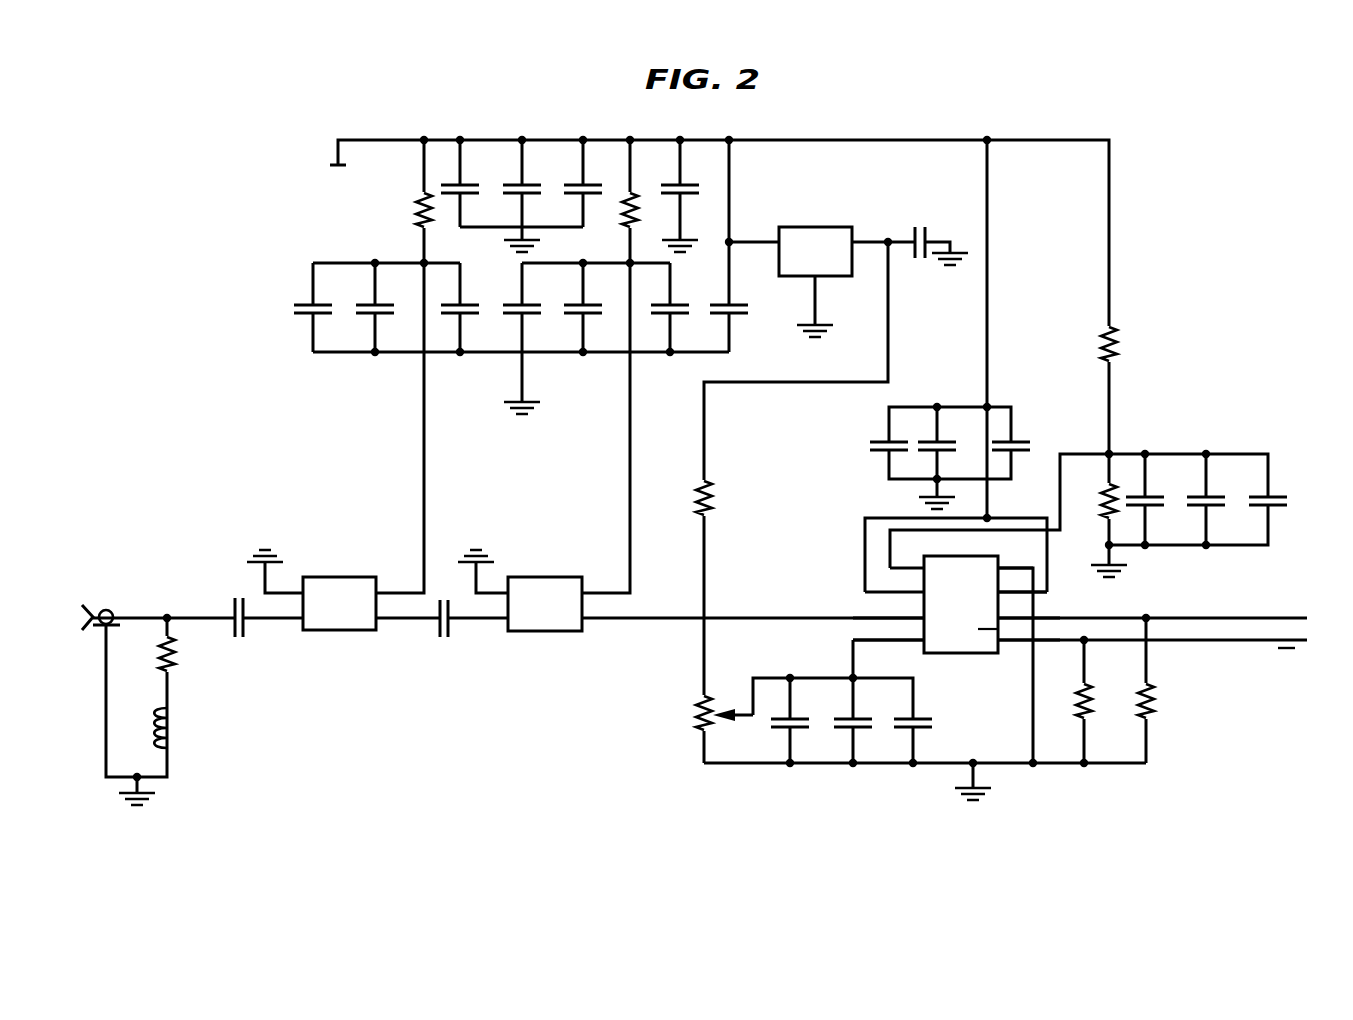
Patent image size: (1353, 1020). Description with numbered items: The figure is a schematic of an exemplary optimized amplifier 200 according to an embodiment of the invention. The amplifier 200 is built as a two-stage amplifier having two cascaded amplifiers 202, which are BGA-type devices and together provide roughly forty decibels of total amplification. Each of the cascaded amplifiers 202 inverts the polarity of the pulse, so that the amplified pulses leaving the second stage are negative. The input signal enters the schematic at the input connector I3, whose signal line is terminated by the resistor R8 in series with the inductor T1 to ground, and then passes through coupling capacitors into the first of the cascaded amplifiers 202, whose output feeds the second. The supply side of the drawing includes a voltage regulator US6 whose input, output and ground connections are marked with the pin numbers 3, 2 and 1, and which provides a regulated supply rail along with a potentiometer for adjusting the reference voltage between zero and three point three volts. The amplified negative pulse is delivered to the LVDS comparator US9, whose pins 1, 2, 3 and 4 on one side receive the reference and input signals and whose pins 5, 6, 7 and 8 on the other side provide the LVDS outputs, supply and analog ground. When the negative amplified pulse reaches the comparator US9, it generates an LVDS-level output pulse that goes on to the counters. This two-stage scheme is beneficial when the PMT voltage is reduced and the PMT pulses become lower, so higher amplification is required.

The optimized amplifier 200 is at (332, 121).
The cascaded amplifiers 202 is at (365, 640).
The voltage regulator US6 is at (839, 258).
The comparator ADCM0553 US9 is at (956, 607).
The input connector I3 is at (138, 592).
The inductor T1 is at (193, 730).
The resistor R8 is at (167, 654).
The pin 1 is at (907, 559).
The pin 2 is at (894, 582).
The pin 3 is at (888, 609).
The pin 4 is at (888, 632).
The pin 5 is at (1029, 632).
The pin 6 is at (1029, 609).
The pin 7 is at (1022, 582).
The pin 8 is at (1015, 559).